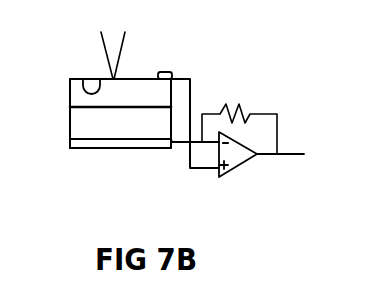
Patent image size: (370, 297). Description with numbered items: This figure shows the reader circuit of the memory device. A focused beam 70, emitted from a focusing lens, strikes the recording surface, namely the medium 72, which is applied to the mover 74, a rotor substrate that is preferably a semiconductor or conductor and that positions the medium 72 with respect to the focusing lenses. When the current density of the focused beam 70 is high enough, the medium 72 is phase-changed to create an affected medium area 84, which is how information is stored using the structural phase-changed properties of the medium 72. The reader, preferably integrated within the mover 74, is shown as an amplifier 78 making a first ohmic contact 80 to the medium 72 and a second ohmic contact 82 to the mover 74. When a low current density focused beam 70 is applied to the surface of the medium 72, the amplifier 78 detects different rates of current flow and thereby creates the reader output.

The focused beam 70 is at (97, 51).
The medium 72 is at (70, 100).
The mover 74 is at (70, 133).
The amplifier 78 is at (250, 177).
The first ohmic contact 80 is at (167, 72).
The second ohmic contact 82 is at (115, 149).
The affected medium area 84 is at (89, 79).